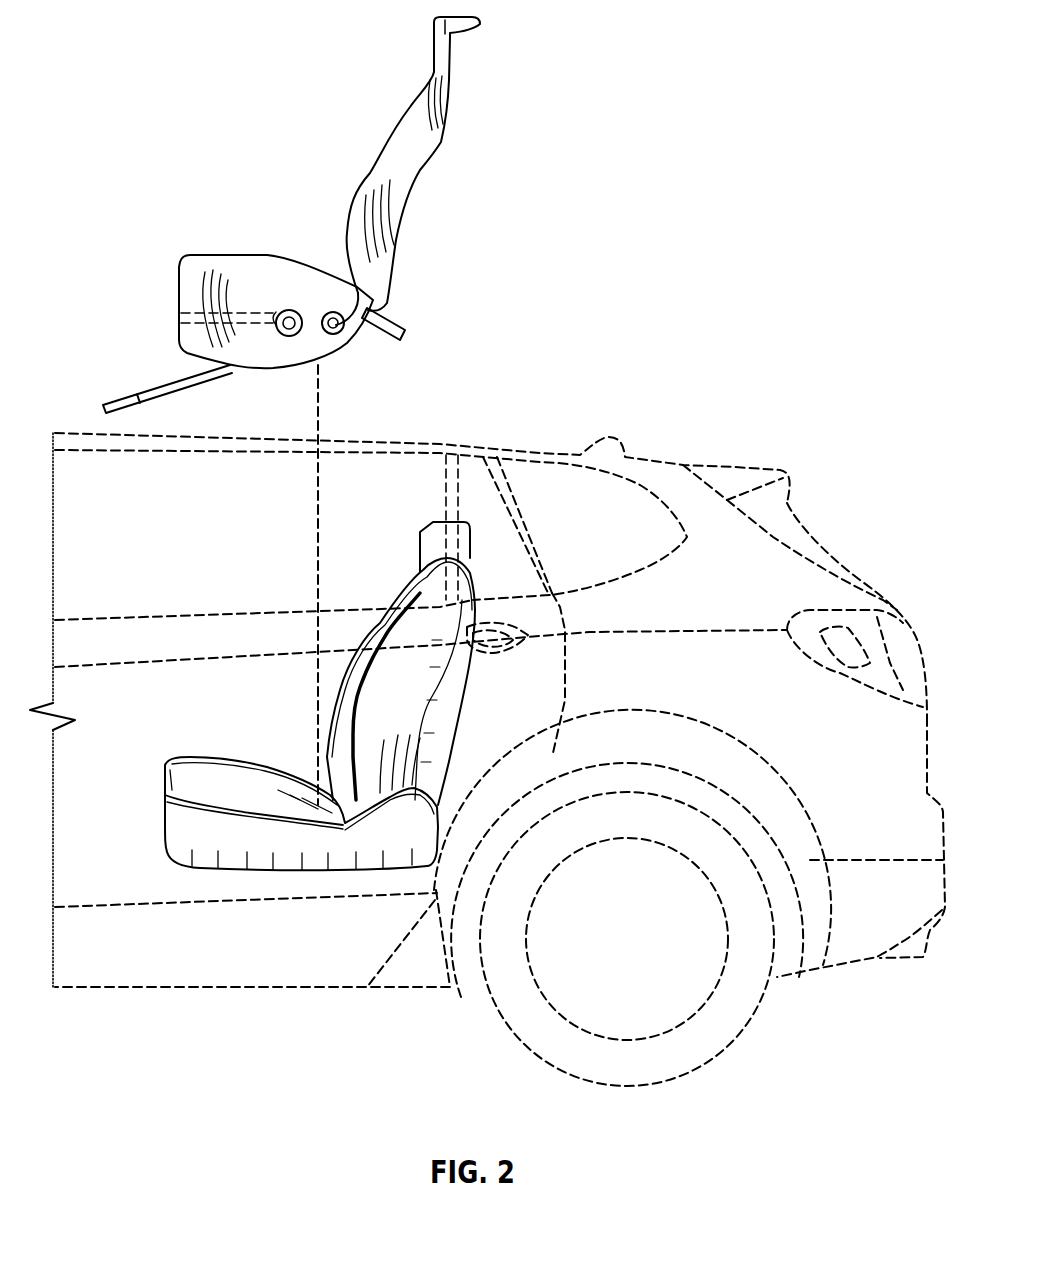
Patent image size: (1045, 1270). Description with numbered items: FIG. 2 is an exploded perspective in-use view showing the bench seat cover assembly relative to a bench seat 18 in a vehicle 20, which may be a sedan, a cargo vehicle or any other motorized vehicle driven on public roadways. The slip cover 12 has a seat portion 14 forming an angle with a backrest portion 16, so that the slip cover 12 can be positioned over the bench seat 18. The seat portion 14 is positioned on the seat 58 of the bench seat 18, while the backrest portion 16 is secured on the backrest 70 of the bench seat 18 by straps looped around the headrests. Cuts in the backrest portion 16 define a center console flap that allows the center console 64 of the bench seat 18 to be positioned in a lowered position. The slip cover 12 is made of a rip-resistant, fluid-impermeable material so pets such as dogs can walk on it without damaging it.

The slip cover 12 is at (457, 142).
The seat portion 14 is at (212, 254).
The backrest portion 16 is at (389, 129).
The bench seat 18 is at (470, 577).
The vehicle 20 is at (716, 456).
The seat 58 is at (240, 762).
The center console 64 is at (391, 630).
The backrest 70 is at (468, 578).